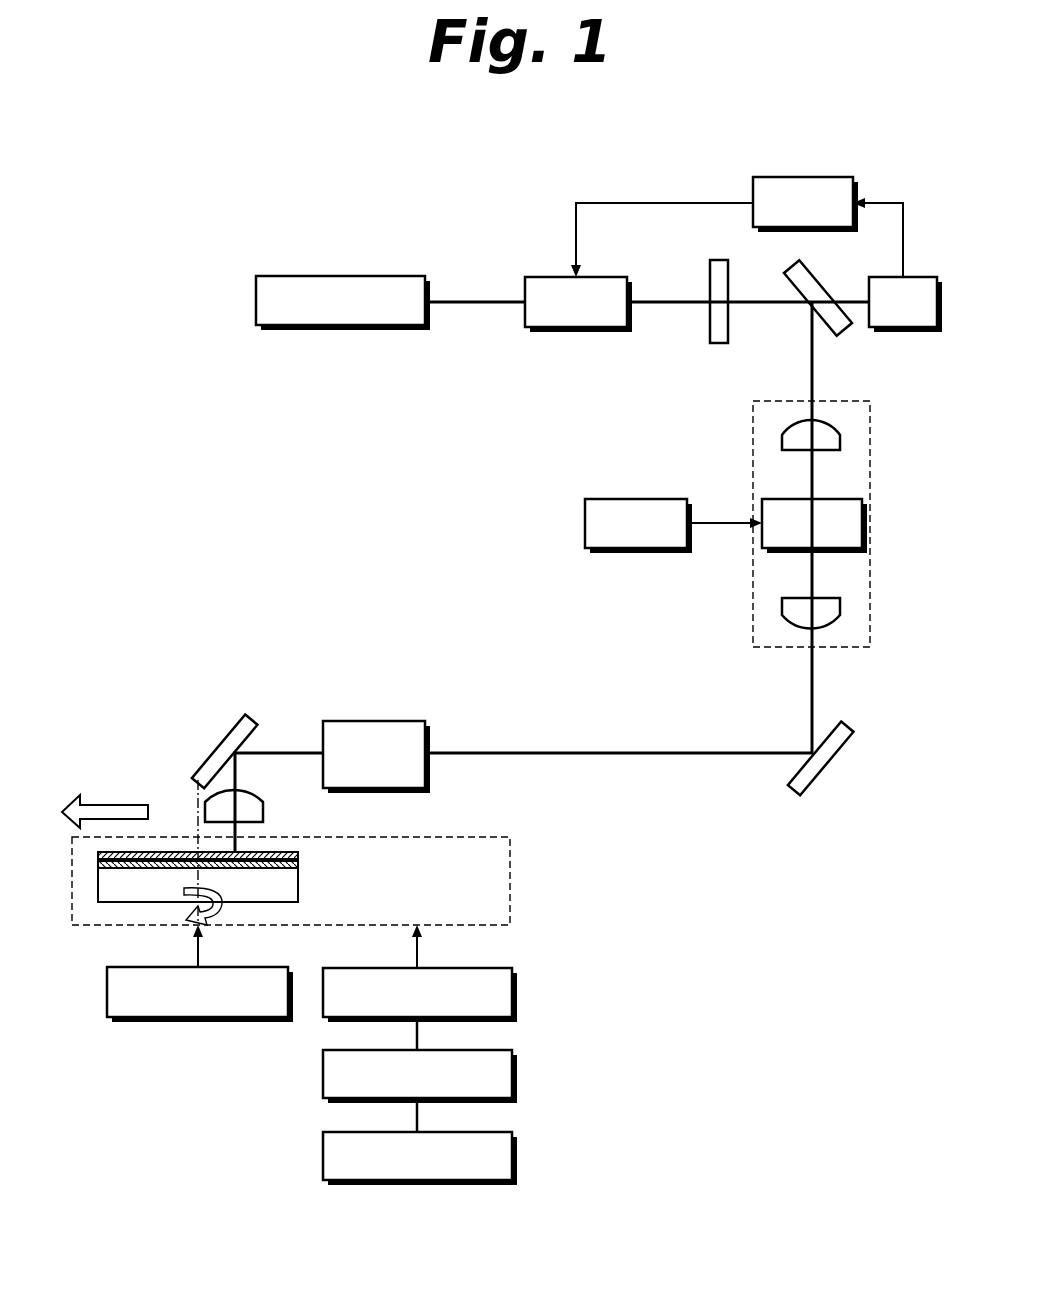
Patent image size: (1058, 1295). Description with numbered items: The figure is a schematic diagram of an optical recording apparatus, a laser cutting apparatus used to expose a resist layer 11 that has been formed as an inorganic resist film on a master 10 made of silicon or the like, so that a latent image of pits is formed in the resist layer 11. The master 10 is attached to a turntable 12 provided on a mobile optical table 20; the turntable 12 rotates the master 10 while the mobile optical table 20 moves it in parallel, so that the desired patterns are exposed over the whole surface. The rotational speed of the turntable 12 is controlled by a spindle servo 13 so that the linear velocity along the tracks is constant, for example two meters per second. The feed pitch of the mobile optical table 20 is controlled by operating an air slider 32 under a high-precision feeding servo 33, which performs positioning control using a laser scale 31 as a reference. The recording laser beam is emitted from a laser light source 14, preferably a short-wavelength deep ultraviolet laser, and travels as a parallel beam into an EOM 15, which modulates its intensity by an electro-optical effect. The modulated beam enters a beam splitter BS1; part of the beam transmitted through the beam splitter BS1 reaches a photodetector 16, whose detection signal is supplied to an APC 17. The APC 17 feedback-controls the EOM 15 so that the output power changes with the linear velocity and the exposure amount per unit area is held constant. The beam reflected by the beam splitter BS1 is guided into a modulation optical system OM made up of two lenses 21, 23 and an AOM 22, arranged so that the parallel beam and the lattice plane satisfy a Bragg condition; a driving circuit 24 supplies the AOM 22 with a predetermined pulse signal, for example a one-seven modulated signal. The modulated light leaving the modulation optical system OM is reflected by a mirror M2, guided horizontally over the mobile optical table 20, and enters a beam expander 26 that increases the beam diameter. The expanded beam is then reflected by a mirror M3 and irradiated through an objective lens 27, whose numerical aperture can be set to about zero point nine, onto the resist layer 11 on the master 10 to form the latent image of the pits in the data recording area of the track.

The master 10 is at (298, 860).
The resist layer 11 is at (290, 852).
The turntable 12 is at (298, 885).
The spindle servo 13 is at (107, 992).
The laser light source 14 is at (342, 276).
The EOM (Electro Optic Modulator) 15 is at (549, 277).
The photodetector 16 is at (916, 277).
The APC (Auto Power Controller) 17 is at (804, 177).
The mobile optical table 20 is at (510, 880).
The lens 21 is at (782, 441).
The AOM (Acoustic Optical Modulator) 22 is at (762, 505).
The lens 23 is at (782, 605).
The driving circuit 24 is at (638, 499).
The beam expander (BEX) 26 is at (375, 721).
The objective lens 27 is at (250, 790).
The laser scale 31 is at (512, 1155).
The air slider 32 is at (512, 993).
The feeding servo 33 is at (512, 1073).
The beam splitter BS1 is at (827, 288).
The modulation optical system OM is at (848, 401).
The mirror M2 is at (828, 767).
The mirror M3 is at (222, 738).